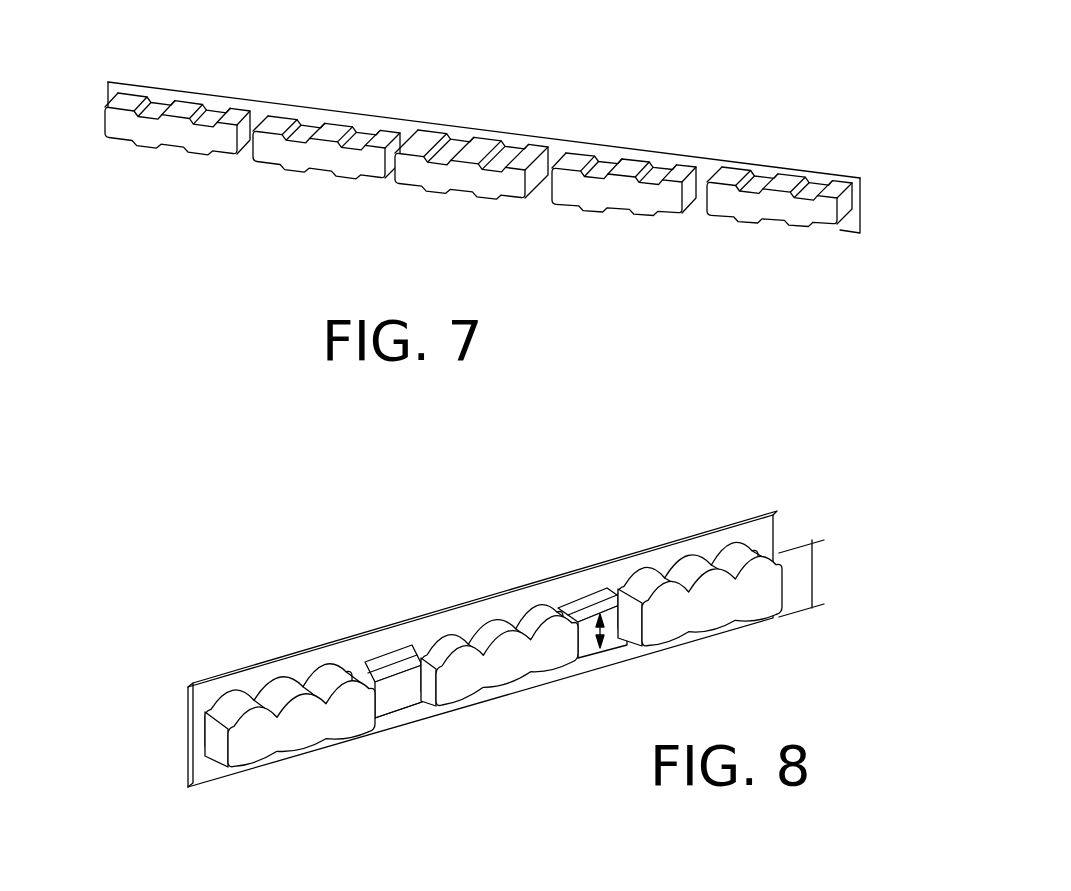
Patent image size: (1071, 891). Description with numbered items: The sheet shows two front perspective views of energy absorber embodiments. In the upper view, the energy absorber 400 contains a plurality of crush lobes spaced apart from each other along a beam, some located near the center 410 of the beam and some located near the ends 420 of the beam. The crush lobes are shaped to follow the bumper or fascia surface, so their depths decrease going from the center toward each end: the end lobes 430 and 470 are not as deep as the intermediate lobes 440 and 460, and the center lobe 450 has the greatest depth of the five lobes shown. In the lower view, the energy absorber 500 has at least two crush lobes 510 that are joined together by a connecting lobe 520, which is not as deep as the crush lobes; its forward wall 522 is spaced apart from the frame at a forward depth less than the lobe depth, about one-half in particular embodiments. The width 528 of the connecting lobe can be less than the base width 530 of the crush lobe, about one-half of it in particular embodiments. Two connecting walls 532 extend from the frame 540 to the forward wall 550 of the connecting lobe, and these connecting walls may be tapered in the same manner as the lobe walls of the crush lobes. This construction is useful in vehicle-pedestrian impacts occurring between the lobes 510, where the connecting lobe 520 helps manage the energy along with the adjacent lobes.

In FIG. 7, the energy absorber 400 is at (633, 113).
In FIG. 7, the center of the beam 410 is at (457, 124).
In FIG. 7, the ends of the beam 420 is at (107, 96).
In FIG. 7, the end lobe 430 is at (166, 154).
In FIG. 7, the intermediate lobe 440 is at (310, 177).
In FIG. 7, the center lobe 450 is at (456, 200).
In FIG. 7, the intermediate lobe 460 is at (611, 215).
In FIG. 7, the end lobe 470 is at (771, 227).
In FIG. 8, the energy absorber 500 is at (144, 691).
In FIG. 8, the crush lobe 510 is at (277, 692).
In FIG. 8, the connecting lobe 520 is at (375, 676).
In FIG. 8, the forward wall of the connecting lobe 522 is at (421, 705).
In FIG. 8, the width of the connecting lobe 528 is at (600, 645).
In FIG. 8, the base width of the crush lobe 530 is at (813, 572).
In FIG. 8, the connecting walls 532 is at (388, 662).
In FIG. 8, the frame 540 is at (200, 777).
In FIG. 8, the forward wall of the connecting lobe 550 is at (418, 704).